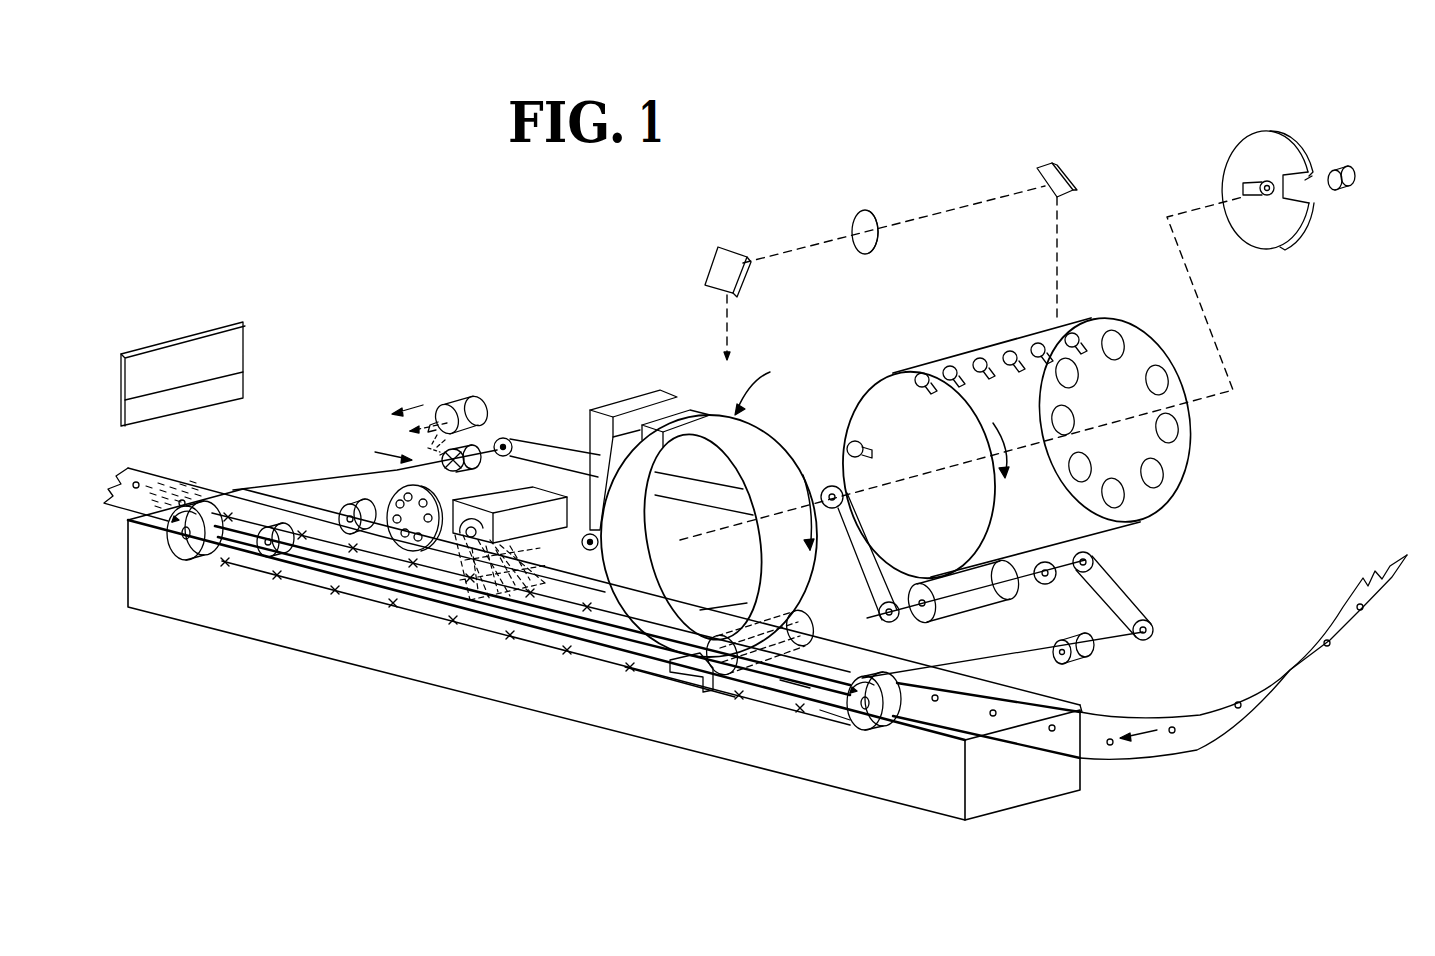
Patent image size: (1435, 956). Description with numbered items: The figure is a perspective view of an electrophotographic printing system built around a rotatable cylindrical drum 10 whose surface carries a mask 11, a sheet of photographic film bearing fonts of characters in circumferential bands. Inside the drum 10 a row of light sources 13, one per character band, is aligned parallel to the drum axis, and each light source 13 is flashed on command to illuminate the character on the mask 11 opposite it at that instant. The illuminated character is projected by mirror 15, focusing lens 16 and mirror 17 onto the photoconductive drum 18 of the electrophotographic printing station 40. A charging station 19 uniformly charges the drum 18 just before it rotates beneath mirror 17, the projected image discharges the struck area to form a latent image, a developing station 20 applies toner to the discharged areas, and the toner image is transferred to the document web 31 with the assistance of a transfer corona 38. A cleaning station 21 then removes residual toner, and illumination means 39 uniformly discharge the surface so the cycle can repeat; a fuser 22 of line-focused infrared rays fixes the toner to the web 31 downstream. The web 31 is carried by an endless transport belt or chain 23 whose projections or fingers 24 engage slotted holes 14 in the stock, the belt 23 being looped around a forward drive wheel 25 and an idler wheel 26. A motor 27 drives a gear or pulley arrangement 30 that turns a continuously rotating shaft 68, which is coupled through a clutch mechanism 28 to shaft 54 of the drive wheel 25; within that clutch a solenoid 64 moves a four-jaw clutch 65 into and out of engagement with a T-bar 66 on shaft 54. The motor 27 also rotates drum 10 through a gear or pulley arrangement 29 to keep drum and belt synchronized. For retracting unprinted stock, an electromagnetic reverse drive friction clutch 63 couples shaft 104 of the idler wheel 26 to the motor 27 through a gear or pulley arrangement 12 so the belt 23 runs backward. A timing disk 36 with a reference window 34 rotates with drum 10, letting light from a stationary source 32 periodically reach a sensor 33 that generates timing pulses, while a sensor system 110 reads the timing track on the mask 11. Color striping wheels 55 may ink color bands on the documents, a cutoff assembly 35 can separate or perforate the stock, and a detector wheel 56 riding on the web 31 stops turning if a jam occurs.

The rotatable cylindrical drum 10 is at (1018, 447).
The mask 11 is at (1090, 520).
The gear or pulley arrangement 12 is at (1140, 618).
The light sources 13 is at (1005, 358).
The slotted holes 14 is at (1050, 732).
The mirror 15 is at (1062, 165).
The focusing lens 16 is at (880, 211).
The mirror 17 is at (731, 245).
The drum 18 is at (803, 570).
The charging station 19 is at (694, 413).
The developing station 20 is at (800, 628).
The cleaning station 21 is at (610, 405).
The fuser 22 is at (508, 502).
The transport belt or chain 23 is at (840, 713).
The projections or fingers 24 is at (795, 690).
The forward drive wheel 25 is at (186, 548).
The idler wheel 26 is at (868, 725).
The motor 27 is at (975, 598).
The clutch mechanism 28 is at (391, 452).
The gear or pulley arrangement 29 is at (884, 600).
The gear or pulley arrangement 30 is at (1032, 553).
The document web 31 is at (1195, 718).
The source of light 32 is at (1270, 195).
The sensor 33 is at (1348, 184).
The reference window 34 is at (1312, 176).
The cutoff assembly 35 is at (245, 358).
The timing disk 36 is at (1283, 150).
The transfer corona 38 is at (685, 690).
The illumination means 39 is at (593, 532).
The electrophotographic printing station 40 is at (766, 383).
The shaft 54 is at (316, 497).
The color striping wheels 55 is at (285, 553).
The detector wheel 56 is at (408, 548).
The electromagnetic reverse drive friction clutch 63 is at (1092, 657).
The solenoid 64 is at (456, 402).
The four-jaw clutch 65 is at (476, 466).
The T-bar 66 is at (453, 472).
The shaft 68 is at (492, 440).
The shaft 104 is at (1010, 665).
The sensor system 110 is at (847, 440).